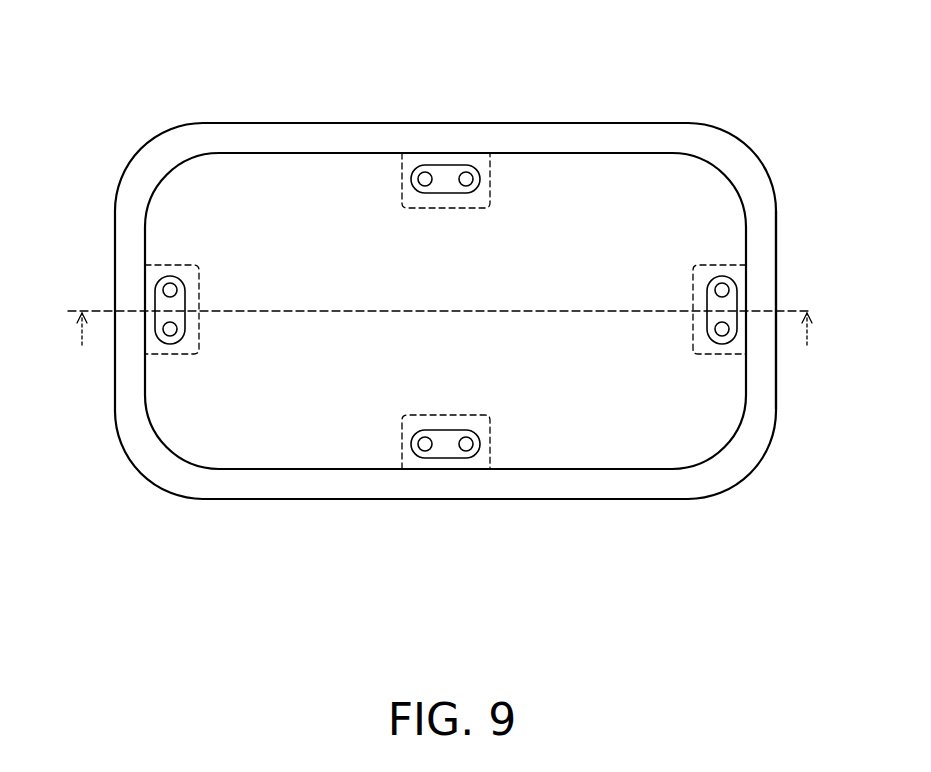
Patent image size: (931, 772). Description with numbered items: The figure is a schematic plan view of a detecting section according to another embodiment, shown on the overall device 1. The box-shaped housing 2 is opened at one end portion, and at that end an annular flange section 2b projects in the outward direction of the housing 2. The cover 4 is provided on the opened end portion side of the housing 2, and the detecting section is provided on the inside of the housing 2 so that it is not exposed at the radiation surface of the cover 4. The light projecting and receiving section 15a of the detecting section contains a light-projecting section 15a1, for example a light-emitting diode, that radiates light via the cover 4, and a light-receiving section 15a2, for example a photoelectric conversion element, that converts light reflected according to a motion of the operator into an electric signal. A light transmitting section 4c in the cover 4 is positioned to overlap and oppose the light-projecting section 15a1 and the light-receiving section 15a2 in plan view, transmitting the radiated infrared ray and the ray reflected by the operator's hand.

The display device 1 is at (136, 85).
The housing 2 is at (92, 253).
The flange section 2b is at (763, 242).
The cover 4 is at (600, 188).
The light transmitting section 4c is at (452, 417).
The light projecting and receiving section 15a is at (565, 566).
The light-projecting section 15a1 is at (425, 452).
The light-receiving section 15a2 is at (466, 452).